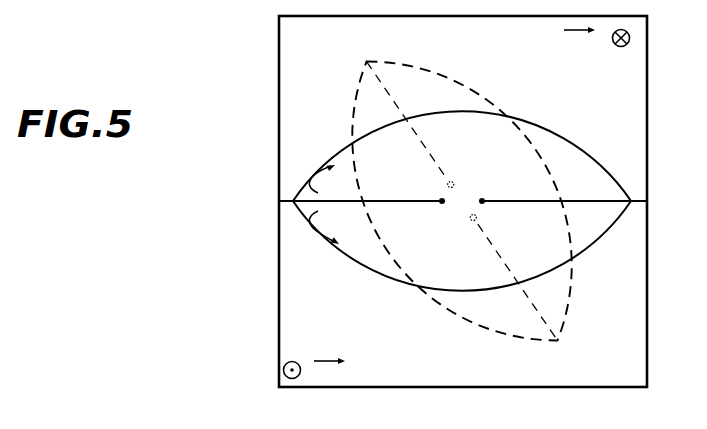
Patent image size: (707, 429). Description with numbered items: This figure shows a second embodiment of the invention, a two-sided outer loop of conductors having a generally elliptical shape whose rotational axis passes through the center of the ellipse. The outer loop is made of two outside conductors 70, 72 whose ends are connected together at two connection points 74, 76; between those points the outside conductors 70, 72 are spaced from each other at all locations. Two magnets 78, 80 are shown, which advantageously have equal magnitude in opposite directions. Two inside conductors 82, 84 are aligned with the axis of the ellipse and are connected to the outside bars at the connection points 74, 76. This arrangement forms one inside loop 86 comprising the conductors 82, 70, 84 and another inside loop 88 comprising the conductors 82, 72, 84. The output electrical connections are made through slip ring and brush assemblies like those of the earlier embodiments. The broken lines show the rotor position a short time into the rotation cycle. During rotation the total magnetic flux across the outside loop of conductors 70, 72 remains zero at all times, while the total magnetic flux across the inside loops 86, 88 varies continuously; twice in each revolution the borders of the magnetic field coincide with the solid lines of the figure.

The outside conductor 70 is at (563, 140).
The outside conductor 72 is at (586, 268).
The connection point 74 is at (279, 201).
The connection point 76 is at (647, 201).
The magnet 78 is at (314, 360).
The magnet 80 is at (601, 50).
The inside conductor 82 is at (405, 202).
The inside conductor 84 is at (495, 201).
The inside loop 86 is at (331, 182).
The inside loop 88 is at (331, 224).